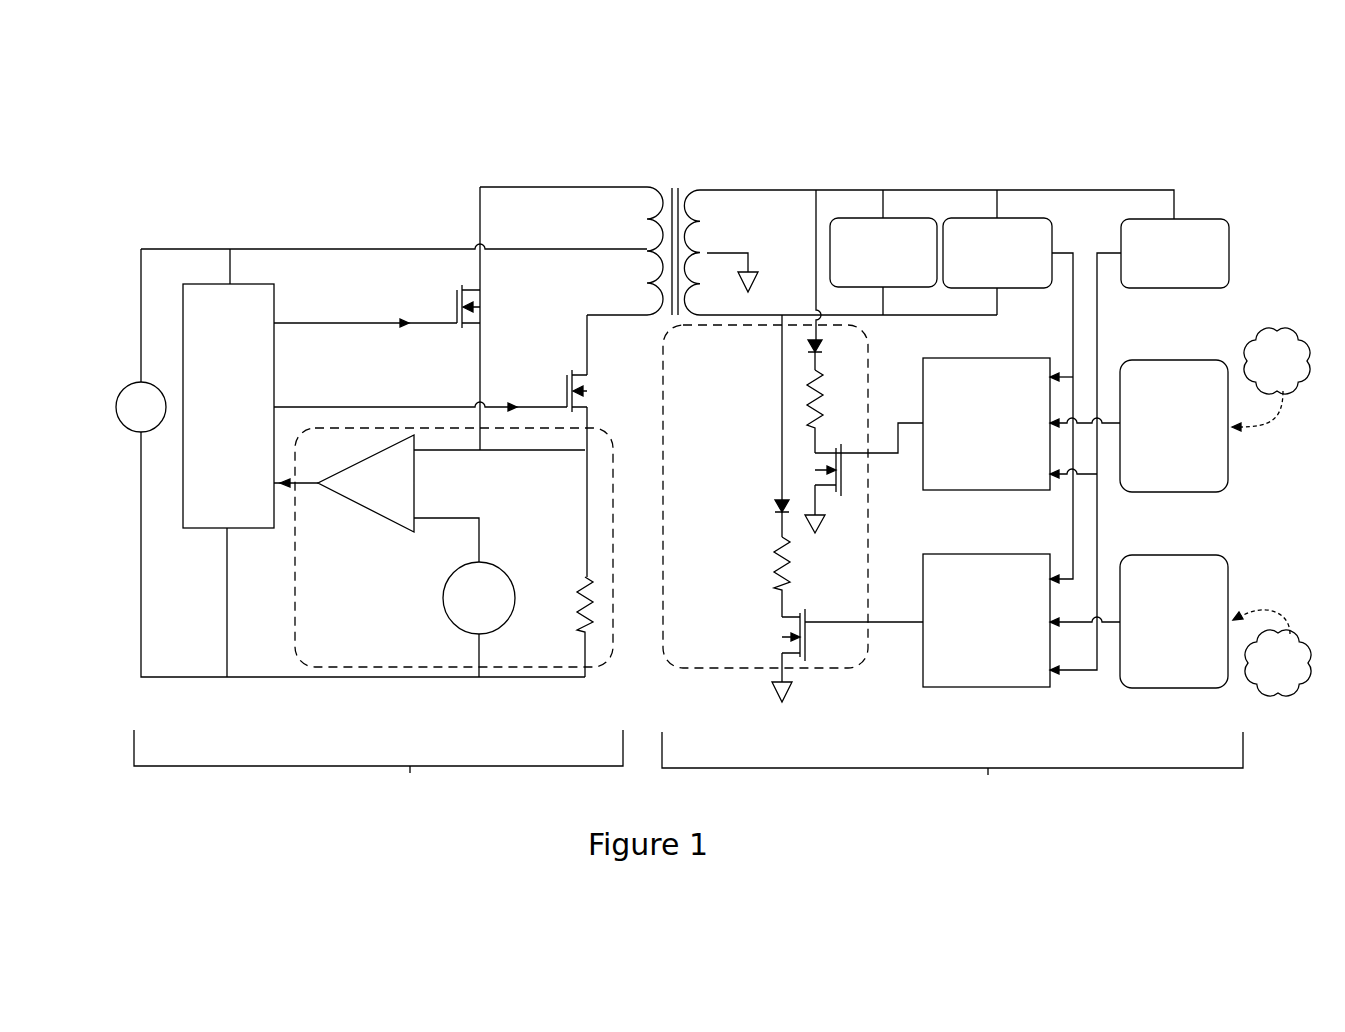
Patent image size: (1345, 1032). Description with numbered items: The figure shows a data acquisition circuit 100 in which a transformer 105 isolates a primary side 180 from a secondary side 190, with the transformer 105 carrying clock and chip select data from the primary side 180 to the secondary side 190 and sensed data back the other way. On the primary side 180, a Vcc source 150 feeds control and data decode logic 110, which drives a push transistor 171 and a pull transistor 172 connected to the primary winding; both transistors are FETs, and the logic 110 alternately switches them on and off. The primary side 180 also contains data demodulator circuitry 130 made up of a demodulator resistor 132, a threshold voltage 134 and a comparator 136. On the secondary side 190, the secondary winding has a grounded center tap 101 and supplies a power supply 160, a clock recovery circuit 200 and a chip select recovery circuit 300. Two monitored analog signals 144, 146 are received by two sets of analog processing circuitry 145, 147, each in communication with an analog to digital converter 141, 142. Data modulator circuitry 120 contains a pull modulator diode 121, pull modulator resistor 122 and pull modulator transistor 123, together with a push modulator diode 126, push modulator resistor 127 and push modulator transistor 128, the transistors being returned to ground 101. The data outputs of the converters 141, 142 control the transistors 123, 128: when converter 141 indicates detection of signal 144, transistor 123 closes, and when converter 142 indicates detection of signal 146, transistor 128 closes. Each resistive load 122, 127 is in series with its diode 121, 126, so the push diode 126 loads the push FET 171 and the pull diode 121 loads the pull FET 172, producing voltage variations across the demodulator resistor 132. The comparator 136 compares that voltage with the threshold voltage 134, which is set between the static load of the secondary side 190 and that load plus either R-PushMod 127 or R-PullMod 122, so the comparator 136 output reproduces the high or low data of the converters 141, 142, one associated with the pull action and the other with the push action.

The data acquisition circuit 100 is at (695, 435).
The ground 101 is at (742, 250).
The transformer 105 is at (653, 184).
The control and data decode logic 110 is at (248, 282).
The data modulator circuitry 120 is at (832, 675).
The pull modulator diode 121 is at (836, 355).
The pull modulator resistor 122 is at (854, 411).
The pull modulator transistor 123 is at (845, 477).
The push modulator diode 126 is at (762, 517).
The push modulator resistor 127 is at (806, 577).
The push modulator transistor 128 is at (829, 634).
The data demodulator circuitry 130 is at (366, 671).
The demodulator resistor 132 is at (625, 627).
The threshold voltage 134 is at (501, 602).
The comparator 136 is at (429, 508).
The analog to digital converter 141 is at (986, 424).
The analog to digital converter 142 is at (986, 620).
The analog signal 144 is at (1279, 379).
The analog processing circuitry 145 is at (1174, 426).
The analog signal 146 is at (1274, 663).
The analog processing circuitry 147 is at (1174, 621).
The Vcc supply 150 is at (115, 402).
The power supply 160 is at (895, 213).
The push transistor 171 is at (498, 318).
The pull transistor 172 is at (606, 401).
The primary side 180 is at (378, 767).
The secondary side 190 is at (952, 769).
The clock recovery circuit 200 is at (1225, 217).
The chip select recovery circuit 300 is at (1040, 212).